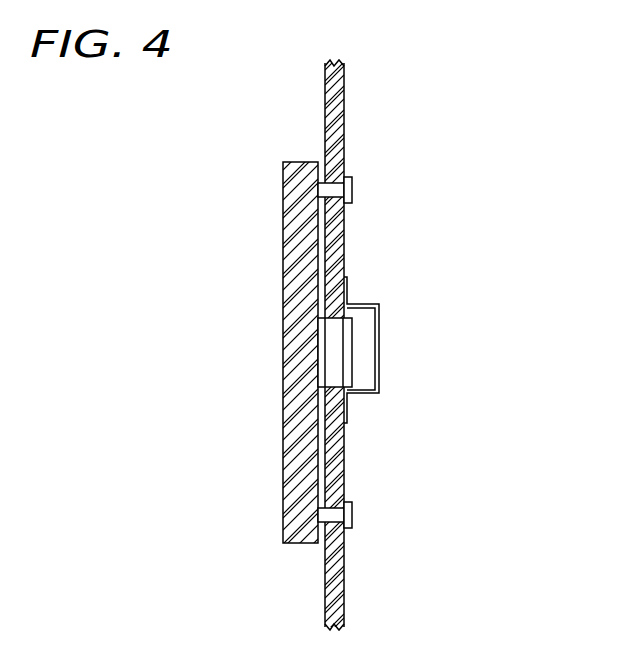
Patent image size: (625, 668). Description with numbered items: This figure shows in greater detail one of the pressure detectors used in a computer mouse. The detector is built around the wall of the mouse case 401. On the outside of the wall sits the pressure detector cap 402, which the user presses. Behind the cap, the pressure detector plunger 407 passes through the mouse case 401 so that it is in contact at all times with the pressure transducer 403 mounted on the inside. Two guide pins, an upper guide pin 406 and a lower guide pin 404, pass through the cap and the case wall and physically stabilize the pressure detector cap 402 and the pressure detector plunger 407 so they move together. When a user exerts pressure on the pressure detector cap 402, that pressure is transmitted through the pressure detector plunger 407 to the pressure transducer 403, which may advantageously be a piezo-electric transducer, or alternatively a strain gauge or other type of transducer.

The mouse case 401 is at (344, 115).
The pressure detector cap 402 is at (285, 190).
The pressure transducer 403 is at (376, 383).
The guide pin 404 is at (352, 515).
The guide pin 406 is at (352, 190).
The pressure detector plunger 407 is at (347, 330).